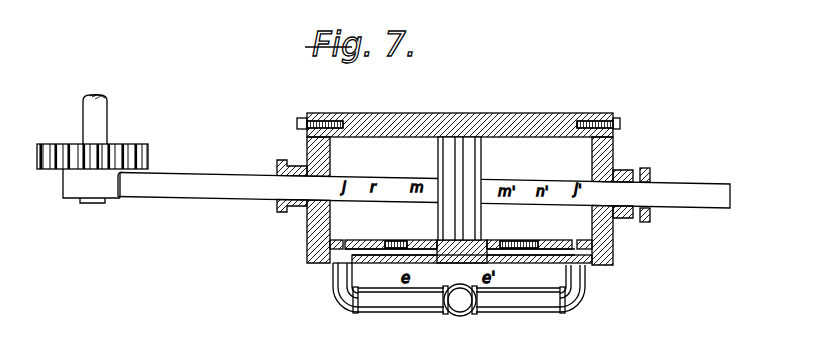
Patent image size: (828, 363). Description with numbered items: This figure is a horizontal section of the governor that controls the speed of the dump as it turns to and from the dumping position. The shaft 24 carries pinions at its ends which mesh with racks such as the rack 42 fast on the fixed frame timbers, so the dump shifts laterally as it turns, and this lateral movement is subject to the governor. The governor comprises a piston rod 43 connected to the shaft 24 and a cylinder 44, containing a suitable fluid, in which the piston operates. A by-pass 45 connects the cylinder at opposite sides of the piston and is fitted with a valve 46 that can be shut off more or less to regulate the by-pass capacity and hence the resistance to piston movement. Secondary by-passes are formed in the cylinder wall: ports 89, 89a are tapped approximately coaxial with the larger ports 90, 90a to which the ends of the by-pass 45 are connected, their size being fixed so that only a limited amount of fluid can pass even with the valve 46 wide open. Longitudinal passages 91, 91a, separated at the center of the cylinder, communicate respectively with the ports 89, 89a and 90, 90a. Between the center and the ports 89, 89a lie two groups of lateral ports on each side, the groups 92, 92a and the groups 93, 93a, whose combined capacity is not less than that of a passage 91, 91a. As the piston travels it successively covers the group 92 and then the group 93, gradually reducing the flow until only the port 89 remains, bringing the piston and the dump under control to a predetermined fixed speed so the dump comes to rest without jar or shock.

The shaft 24 is at (102, 113).
The rack 42 is at (155, 145).
The piston rod 43 is at (185, 190).
The cylinder 44 is at (386, 113).
The by-pass 45 is at (385, 312).
The valve 46 is at (462, 316).
The port 89 is at (350, 234).
The port 89a is at (578, 240).
The port 90 is at (342, 267).
The port 90a is at (613, 262).
The longitudinal port 91 is at (374, 252).
The longitudinal port 91a is at (508, 256).
The group of lateral ports 92 is at (426, 240).
The group of lateral ports 92a is at (497, 240).
The group of lateral ports 93 is at (392, 240).
The group of lateral ports 93a is at (536, 234).